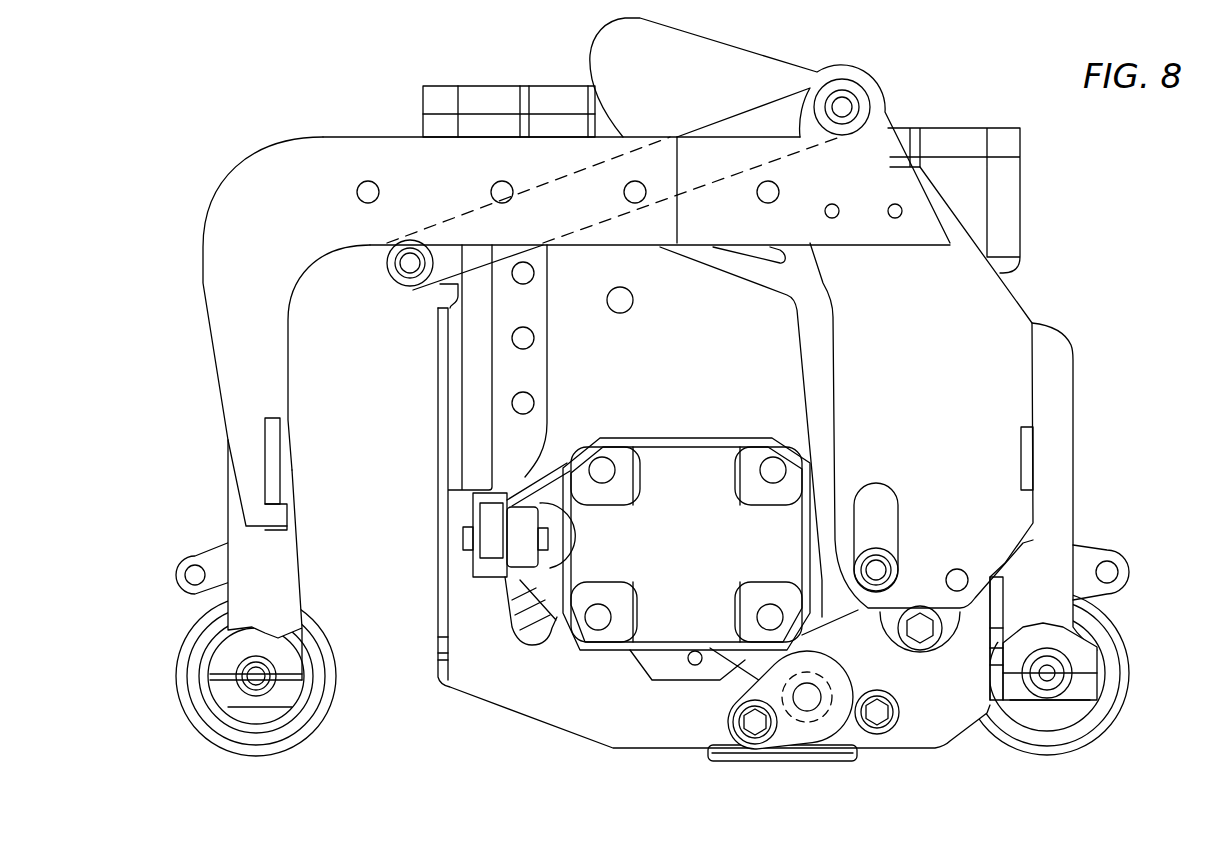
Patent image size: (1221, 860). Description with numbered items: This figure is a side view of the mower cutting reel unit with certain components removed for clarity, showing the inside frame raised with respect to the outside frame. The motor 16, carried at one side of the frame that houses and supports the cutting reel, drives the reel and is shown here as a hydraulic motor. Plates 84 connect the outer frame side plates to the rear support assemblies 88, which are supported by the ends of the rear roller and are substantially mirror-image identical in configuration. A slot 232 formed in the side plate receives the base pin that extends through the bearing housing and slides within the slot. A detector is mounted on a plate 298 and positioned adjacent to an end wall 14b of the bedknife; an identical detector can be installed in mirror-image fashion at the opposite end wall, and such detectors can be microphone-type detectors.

The end wall 14b is at (787, 665).
The motor 16 is at (675, 615).
The plate 84 is at (1028, 452).
The rear support assembly 88 is at (1065, 480).
The slot 232 is at (542, 640).
The plate 298 is at (833, 723).